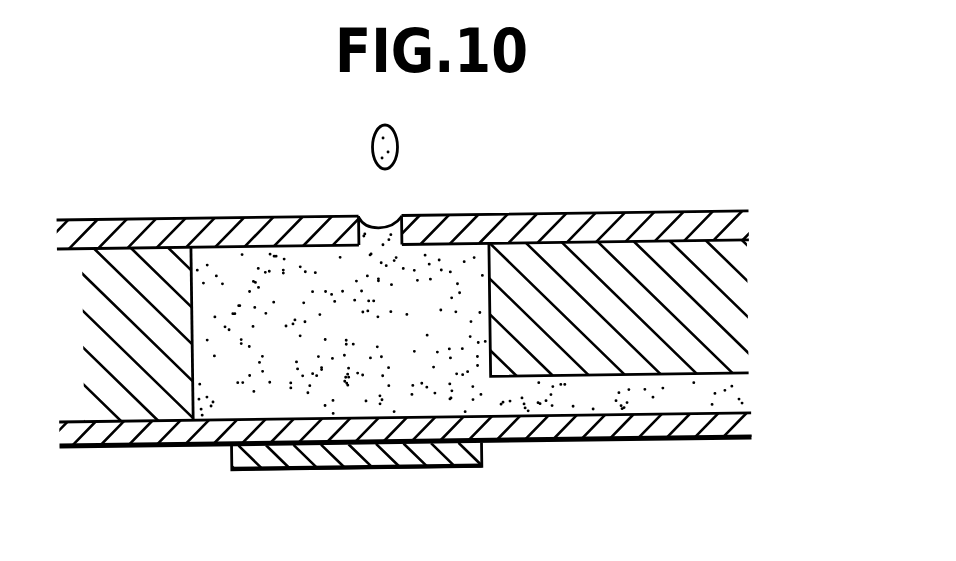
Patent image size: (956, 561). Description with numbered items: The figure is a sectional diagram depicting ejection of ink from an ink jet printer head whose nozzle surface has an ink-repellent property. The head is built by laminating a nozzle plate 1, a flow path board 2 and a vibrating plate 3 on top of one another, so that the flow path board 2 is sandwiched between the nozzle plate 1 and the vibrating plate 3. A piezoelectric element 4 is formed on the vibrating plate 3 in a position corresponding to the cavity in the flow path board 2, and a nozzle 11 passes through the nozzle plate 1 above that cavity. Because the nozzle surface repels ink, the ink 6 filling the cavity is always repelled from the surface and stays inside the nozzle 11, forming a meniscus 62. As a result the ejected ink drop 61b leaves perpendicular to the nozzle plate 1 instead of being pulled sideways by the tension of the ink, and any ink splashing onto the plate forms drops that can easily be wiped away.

The nozzle plate 1 is at (717, 222).
The flow path board 2 is at (704, 312).
The vibrating plate 3 is at (717, 424).
The piezoelectric element 4 is at (445, 455).
The ink 6 is at (222, 393).
The nozzle 11 is at (388, 216).
The ejected ink drop 61b is at (399, 144).
The meniscus 62 is at (368, 224).